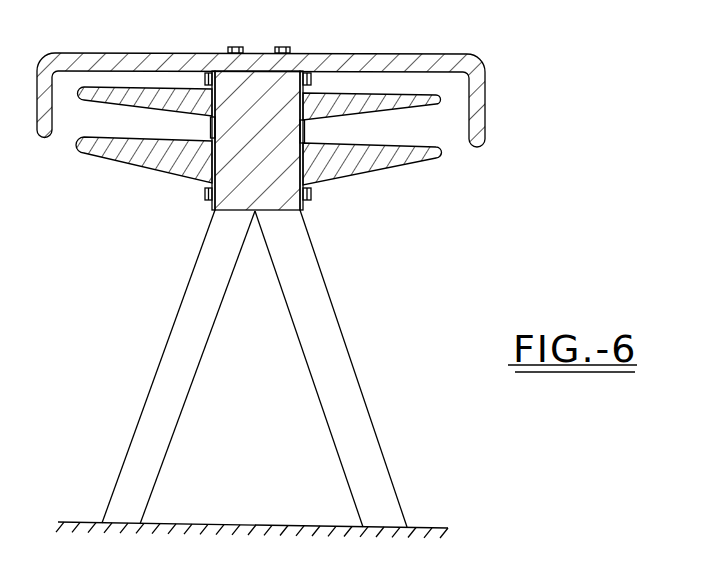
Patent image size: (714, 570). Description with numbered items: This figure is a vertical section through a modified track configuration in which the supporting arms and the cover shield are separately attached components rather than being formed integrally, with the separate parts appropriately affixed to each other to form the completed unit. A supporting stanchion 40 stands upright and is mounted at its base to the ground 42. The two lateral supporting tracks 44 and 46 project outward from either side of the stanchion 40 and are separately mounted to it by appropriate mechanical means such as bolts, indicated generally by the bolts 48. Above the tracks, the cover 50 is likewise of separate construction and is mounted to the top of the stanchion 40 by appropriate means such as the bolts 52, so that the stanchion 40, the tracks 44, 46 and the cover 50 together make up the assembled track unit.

The supporting stanchion 40 is at (172, 340).
The ground 42 is at (243, 524).
The lateral supporting track 44 is at (115, 153).
The lateral supporting track 46 is at (115, 98).
The bolts 48 is at (203, 76).
The cover 50 is at (480, 77).
The bolts 52 is at (283, 47).